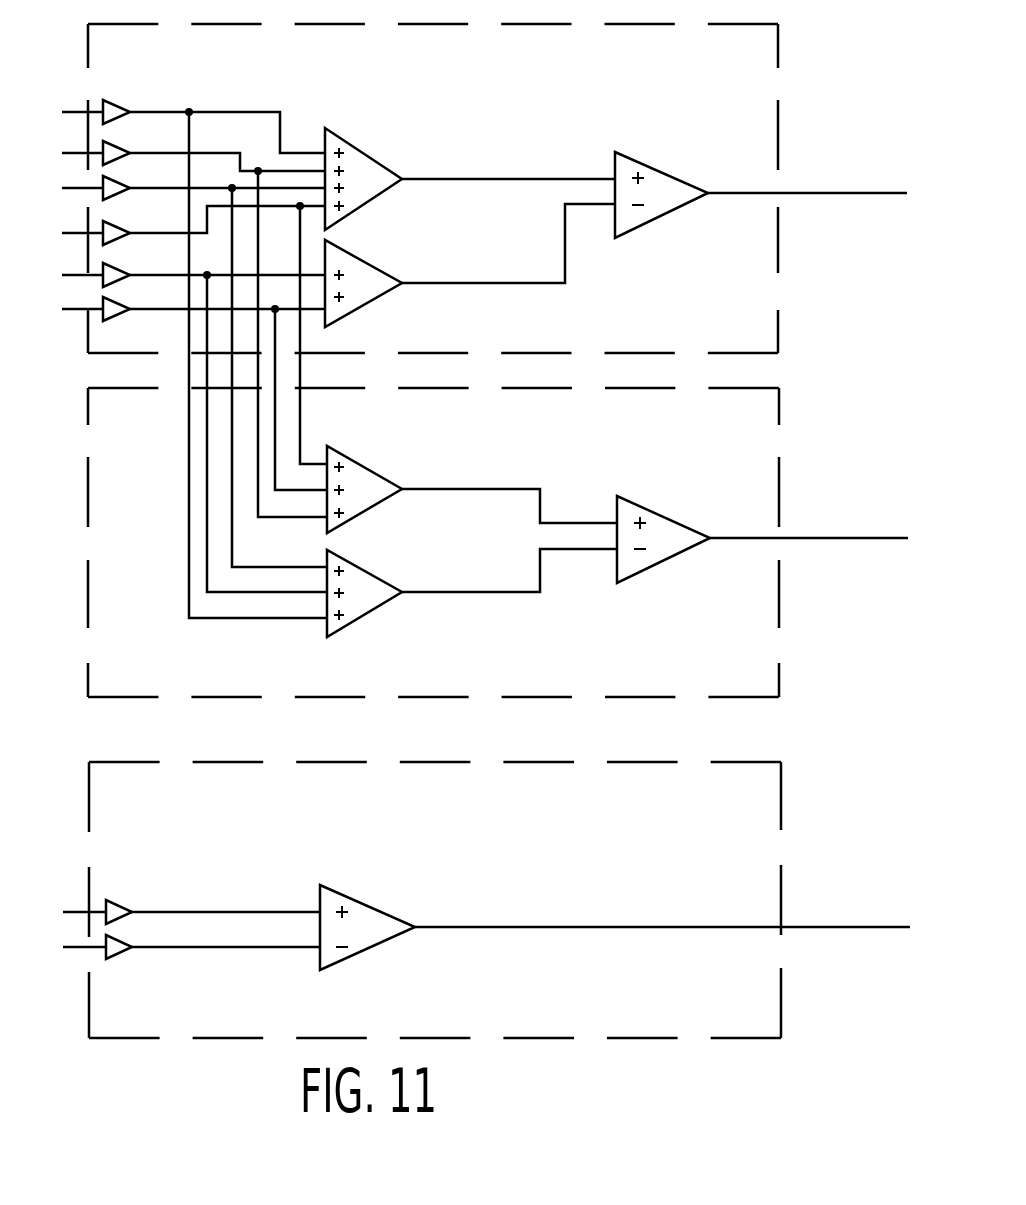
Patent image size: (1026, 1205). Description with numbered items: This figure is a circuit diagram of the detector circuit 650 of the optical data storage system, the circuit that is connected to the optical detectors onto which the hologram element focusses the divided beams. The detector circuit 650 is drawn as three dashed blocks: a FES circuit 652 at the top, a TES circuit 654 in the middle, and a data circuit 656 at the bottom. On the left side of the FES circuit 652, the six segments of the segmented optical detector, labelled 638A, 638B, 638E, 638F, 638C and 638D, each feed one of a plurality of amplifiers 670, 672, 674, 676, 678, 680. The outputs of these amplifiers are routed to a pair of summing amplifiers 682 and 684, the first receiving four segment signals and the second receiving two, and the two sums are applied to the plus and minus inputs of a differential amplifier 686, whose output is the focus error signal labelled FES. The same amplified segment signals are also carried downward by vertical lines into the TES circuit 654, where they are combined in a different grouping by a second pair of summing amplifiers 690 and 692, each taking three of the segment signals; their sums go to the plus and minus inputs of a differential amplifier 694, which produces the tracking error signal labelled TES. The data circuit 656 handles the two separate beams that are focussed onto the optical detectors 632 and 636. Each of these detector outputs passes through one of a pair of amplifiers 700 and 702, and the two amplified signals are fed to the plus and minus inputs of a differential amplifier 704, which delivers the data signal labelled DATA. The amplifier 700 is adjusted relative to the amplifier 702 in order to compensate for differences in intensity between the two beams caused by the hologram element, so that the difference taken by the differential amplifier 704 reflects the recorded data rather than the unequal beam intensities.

The detector circuit 650 is at (228, 1049).
The FES circuit 652 is at (778, 126).
The TES circuit 654 is at (779, 478).
The data circuit 656 is at (781, 786).
The segment of segmented optical detector 638A is at (70, 97).
The segment of segmented optical detector 638B is at (70, 140).
The segment of segmented optical detector 638C is at (70, 261).
The segment of segmented optical detector 638D is at (70, 295).
The segment of segmented optical detector 638E is at (70, 175).
The segment of segmented optical detector 638F is at (70, 219).
The optical detector 632 is at (77, 898).
The optical detector 636 is at (77, 932).
The amplifier 670 is at (119, 106).
The amplifier 672 is at (119, 147).
The amplifier 674 is at (119, 182).
The amplifier 676 is at (119, 227).
The amplifier 678 is at (119, 269).
The amplifier 680 is at (119, 303).
The summing amplifier 682 is at (378, 160).
The summing amplifier 684 is at (378, 268).
The differential amplifier 686 is at (662, 171).
The summing amplifier 690 is at (370, 471).
The summing amplifier 692 is at (370, 574).
The differential amplifier 694 is at (665, 516).
The amplifier 700 is at (122, 906).
The amplifier 702 is at (122, 941).
The differential amplifier 704 is at (366, 900).